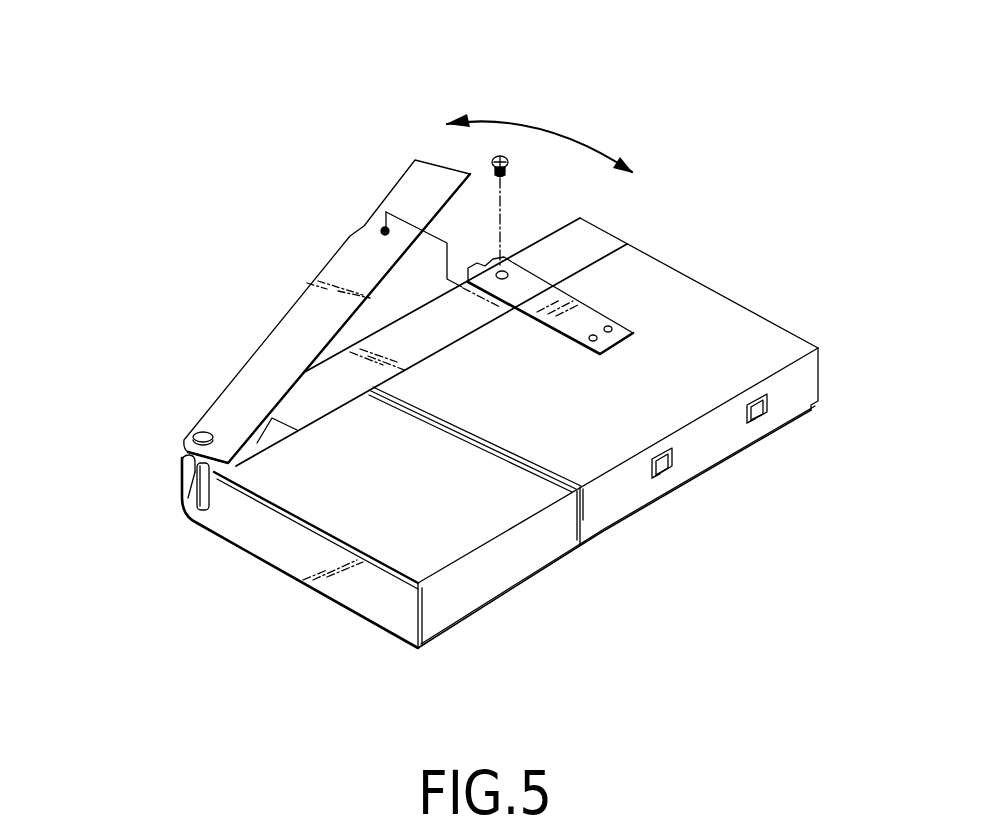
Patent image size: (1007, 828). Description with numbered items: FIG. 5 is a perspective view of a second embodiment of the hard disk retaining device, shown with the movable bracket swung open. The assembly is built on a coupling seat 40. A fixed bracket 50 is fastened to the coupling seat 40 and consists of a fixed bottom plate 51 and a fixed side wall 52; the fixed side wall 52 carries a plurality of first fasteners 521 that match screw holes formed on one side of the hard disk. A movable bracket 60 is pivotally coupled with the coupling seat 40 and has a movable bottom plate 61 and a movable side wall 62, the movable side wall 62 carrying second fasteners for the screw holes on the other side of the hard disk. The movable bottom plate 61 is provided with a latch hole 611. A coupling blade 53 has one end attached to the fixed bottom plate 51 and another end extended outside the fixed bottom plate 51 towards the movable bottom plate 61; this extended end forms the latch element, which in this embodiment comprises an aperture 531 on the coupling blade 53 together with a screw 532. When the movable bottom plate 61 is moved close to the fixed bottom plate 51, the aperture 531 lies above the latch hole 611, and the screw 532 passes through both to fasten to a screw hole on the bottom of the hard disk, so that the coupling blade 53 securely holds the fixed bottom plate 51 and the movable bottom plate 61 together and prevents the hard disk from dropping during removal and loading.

The coupling seat 40 is at (290, 558).
The fixed bracket 50 is at (487, 603).
The fixed bottom plate 51 is at (507, 507).
The fixed side wall 52 is at (603, 500).
The first fasteners 521 is at (668, 470).
The coupling blade 53 is at (587, 322).
The aperture 531 is at (505, 268).
The screw 532 is at (500, 156).
The movable bracket 60 is at (243, 373).
The movable bottom plate 61 is at (298, 313).
The latch hole 611 is at (385, 231).
The movable side wall 62 is at (188, 475).